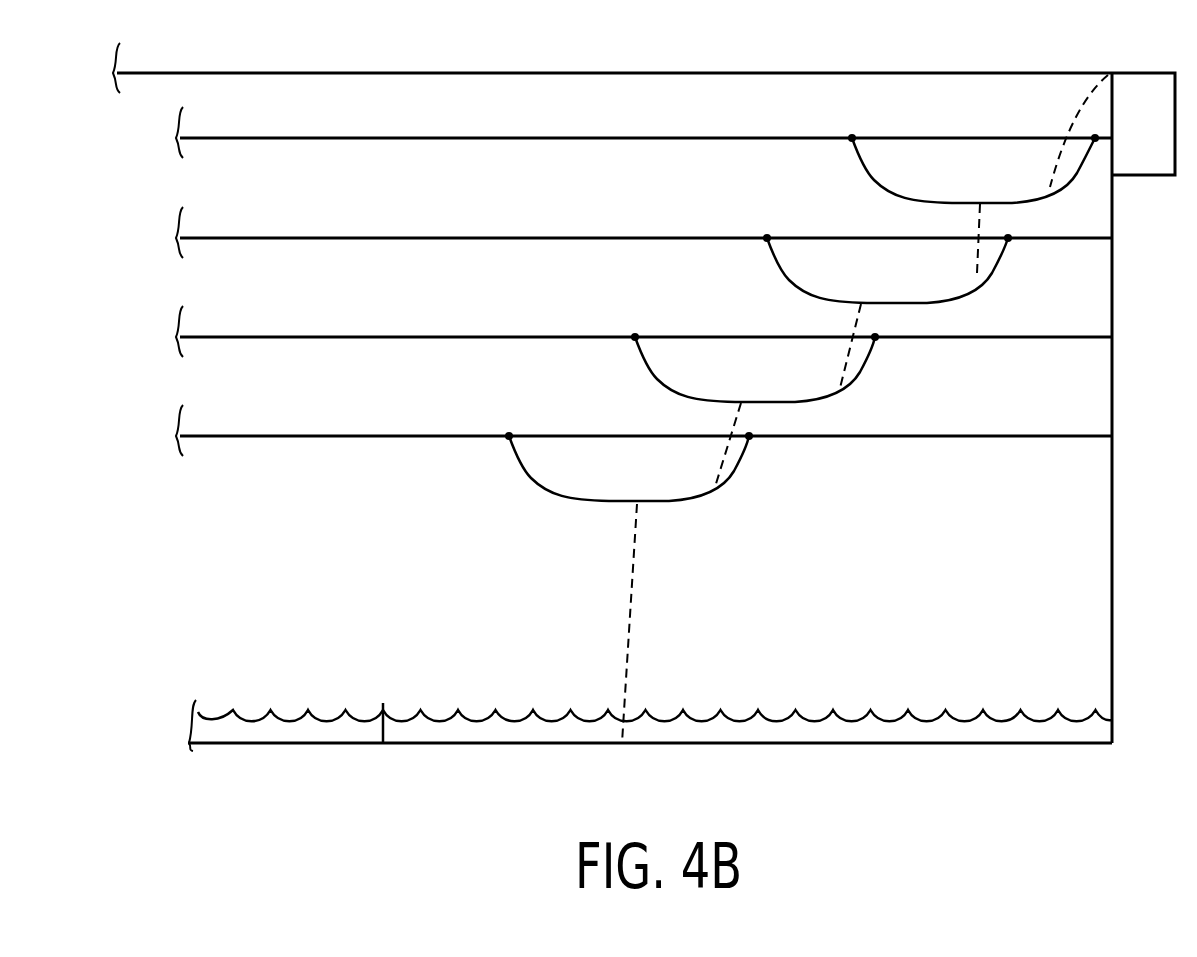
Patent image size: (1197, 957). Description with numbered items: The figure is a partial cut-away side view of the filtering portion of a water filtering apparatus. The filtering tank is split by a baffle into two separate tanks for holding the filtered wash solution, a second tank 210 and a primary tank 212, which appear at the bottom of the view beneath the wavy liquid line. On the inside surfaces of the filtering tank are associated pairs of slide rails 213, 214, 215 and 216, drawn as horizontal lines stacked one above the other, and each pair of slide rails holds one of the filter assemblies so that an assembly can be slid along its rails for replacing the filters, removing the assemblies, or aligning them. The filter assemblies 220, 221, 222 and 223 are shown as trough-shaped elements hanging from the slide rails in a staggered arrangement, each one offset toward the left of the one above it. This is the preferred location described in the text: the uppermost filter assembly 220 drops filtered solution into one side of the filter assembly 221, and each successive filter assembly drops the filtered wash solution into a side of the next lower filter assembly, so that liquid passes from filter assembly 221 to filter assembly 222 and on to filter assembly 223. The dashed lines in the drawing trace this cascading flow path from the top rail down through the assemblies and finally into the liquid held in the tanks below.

The second tank 210 is at (287, 730).
The primary tank 212 is at (775, 730).
The slide rail 213 is at (345, 138).
The slide rail 214 is at (345, 238).
The slide rail 215 is at (345, 337).
The slide rail 216 is at (345, 436).
The filter assembly 220 is at (864, 168).
The filter assembly 221 is at (776, 256).
The filter assembly 222 is at (650, 368).
The filter assembly 223 is at (520, 458).